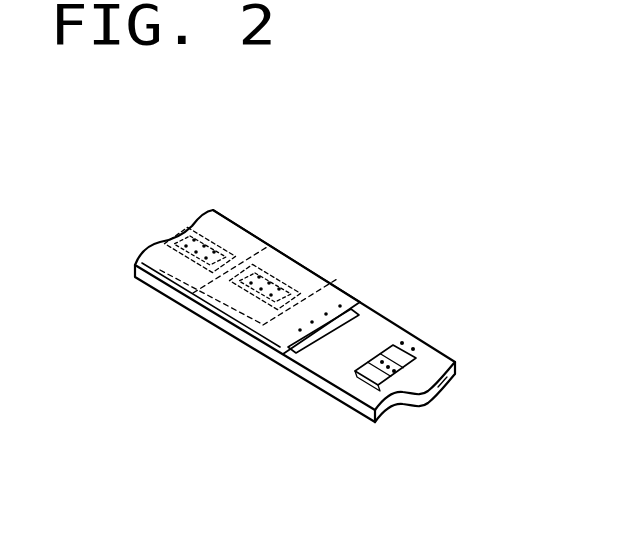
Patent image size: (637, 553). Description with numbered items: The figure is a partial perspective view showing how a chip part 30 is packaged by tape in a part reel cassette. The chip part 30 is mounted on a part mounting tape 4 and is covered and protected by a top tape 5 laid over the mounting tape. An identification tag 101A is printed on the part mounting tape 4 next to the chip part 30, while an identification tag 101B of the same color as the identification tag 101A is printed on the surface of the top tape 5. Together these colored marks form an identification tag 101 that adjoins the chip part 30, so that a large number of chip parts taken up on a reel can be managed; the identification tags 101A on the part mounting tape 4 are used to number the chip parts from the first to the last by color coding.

The part mounting tape 4 is at (380, 327).
The top tape 5 is at (250, 230).
The chip part 30 is at (350, 373).
The identification tag 101 is at (447, 377).
The identification tag 101A is at (422, 355).
The identification tag 101B is at (320, 300).